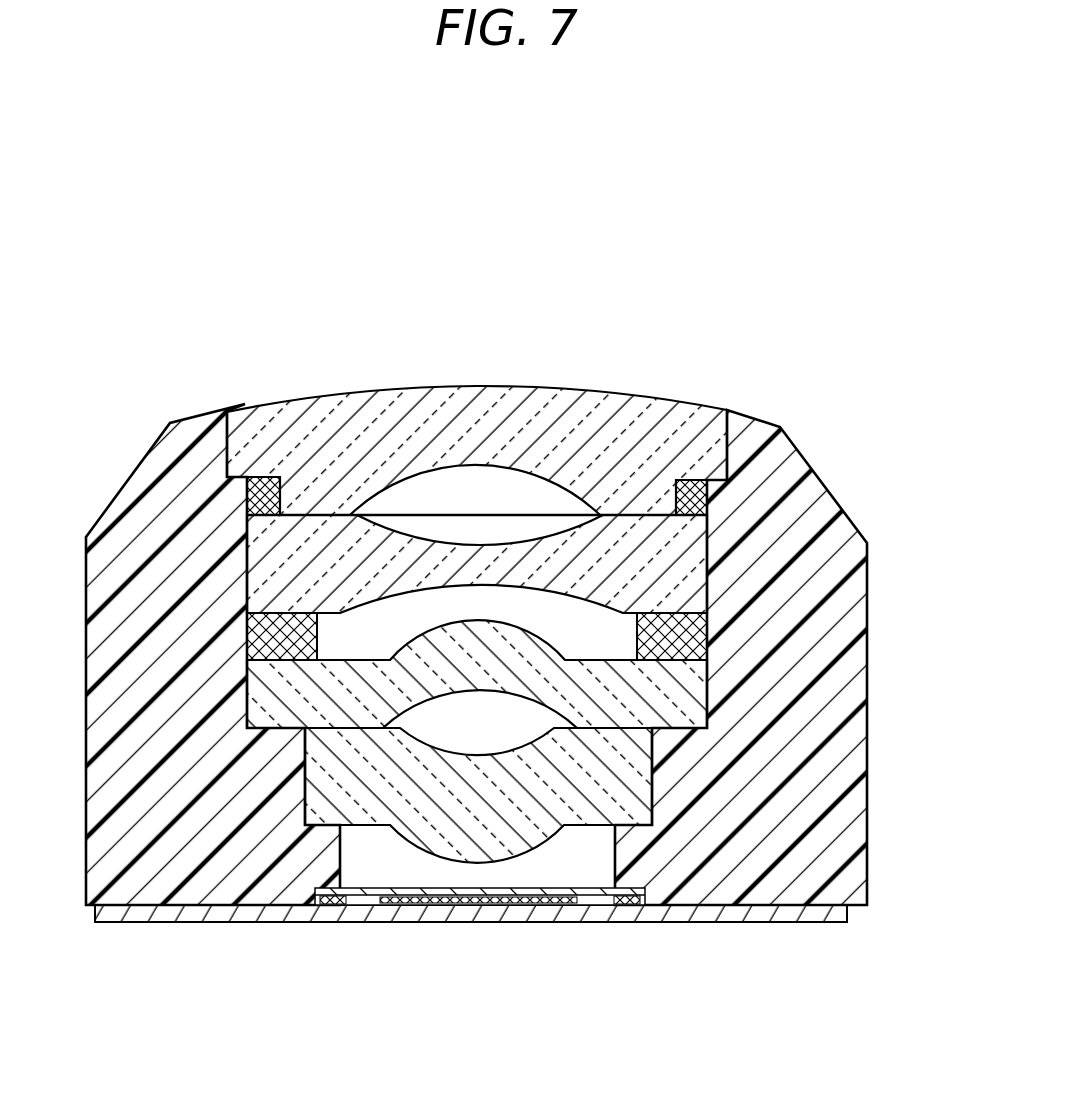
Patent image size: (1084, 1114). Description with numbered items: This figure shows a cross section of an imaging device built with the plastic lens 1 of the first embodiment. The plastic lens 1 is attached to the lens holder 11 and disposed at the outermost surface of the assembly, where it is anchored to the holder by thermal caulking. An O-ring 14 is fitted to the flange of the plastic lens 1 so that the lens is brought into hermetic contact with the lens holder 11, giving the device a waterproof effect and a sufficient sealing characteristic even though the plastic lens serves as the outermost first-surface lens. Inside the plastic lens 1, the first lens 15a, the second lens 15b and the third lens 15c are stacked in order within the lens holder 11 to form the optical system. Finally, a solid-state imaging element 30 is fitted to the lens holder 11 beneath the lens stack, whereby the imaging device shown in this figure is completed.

The plastic lens 1 is at (618, 410).
The lens holder 11 is at (803, 463).
The O-ring 14 is at (710, 496).
The first lens 15a is at (695, 545).
The second lens 15b is at (687, 692).
The third lens 15c is at (638, 800).
The solid-state imaging element 30 is at (570, 922).